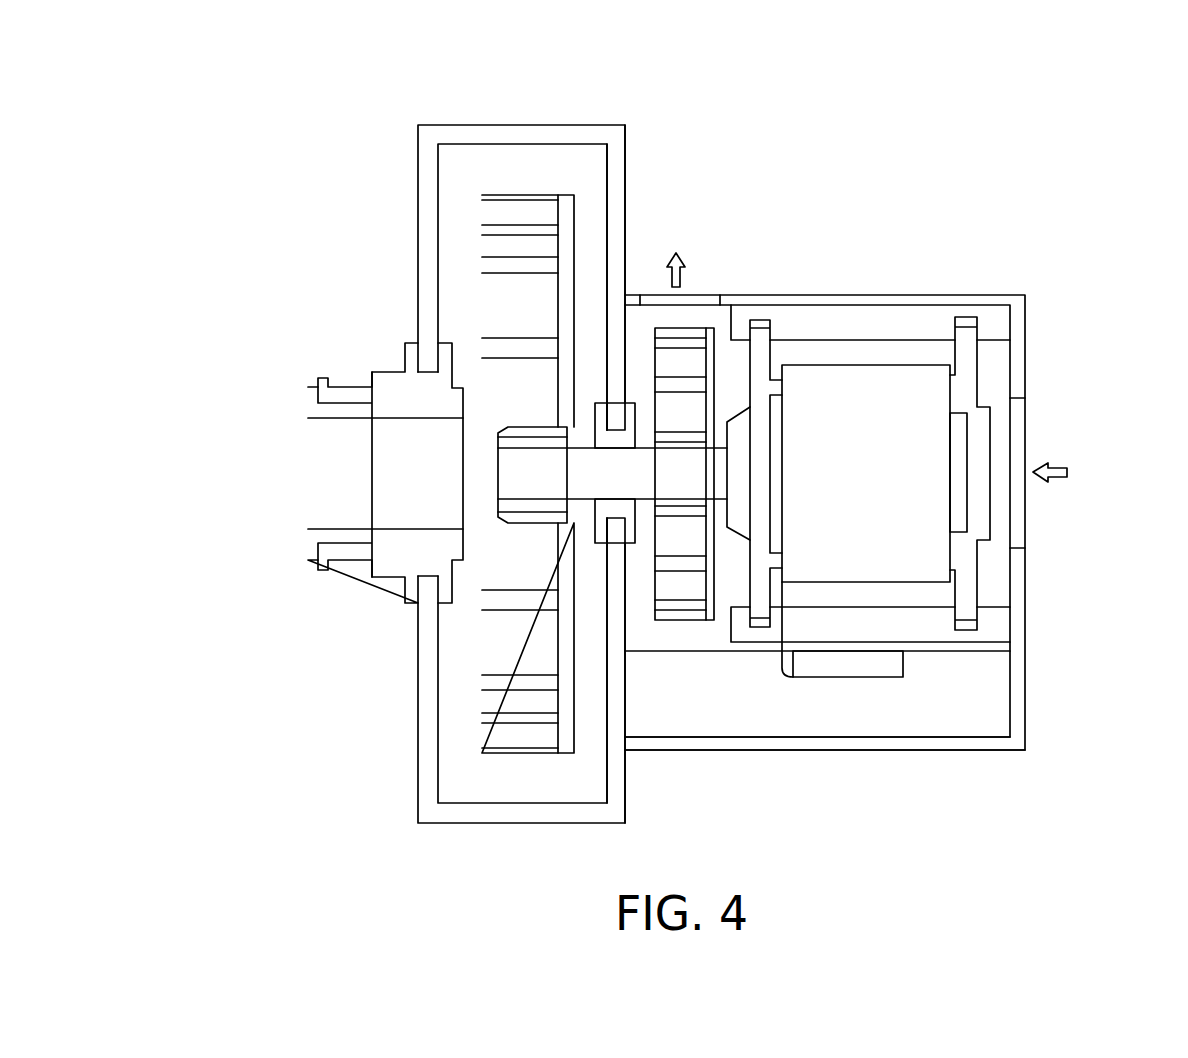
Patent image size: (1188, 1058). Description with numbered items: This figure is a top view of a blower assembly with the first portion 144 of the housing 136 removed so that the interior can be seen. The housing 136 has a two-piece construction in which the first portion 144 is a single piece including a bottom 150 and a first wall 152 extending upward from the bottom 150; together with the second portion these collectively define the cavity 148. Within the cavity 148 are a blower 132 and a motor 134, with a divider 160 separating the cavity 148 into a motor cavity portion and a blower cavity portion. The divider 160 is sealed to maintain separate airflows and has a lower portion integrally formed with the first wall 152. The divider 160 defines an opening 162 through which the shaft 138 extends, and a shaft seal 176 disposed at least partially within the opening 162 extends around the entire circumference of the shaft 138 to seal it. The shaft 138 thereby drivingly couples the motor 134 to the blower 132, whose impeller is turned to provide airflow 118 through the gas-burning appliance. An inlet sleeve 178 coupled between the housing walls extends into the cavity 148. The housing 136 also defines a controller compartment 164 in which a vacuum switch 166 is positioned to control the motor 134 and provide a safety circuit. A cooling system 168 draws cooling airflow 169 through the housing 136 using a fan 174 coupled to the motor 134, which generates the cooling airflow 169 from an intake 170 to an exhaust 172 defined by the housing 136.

The airflow 118 is at (305, 444).
The blower 132 is at (466, 396).
The motor 134 is at (857, 380).
The housing 136 is at (893, 474).
The shaft 138 is at (582, 462).
The first portion 144 is at (482, 419).
The cavity 148 is at (562, 160).
The bottom 150 is at (735, 539).
The first wall 152 is at (941, 295).
The divider 160 is at (620, 622).
The opening 162 is at (625, 508).
The controller compartment 164 is at (865, 702).
The vacuum switch 166 is at (850, 676).
The cooling system 168 is at (728, 329).
The cooling airflow 169 is at (677, 251).
The intake 170 is at (1012, 550).
The exhaust 172 is at (713, 295).
The fan 174 is at (687, 540).
The shaft seal 176 is at (593, 502).
The inlet sleeve 178 is at (403, 388).